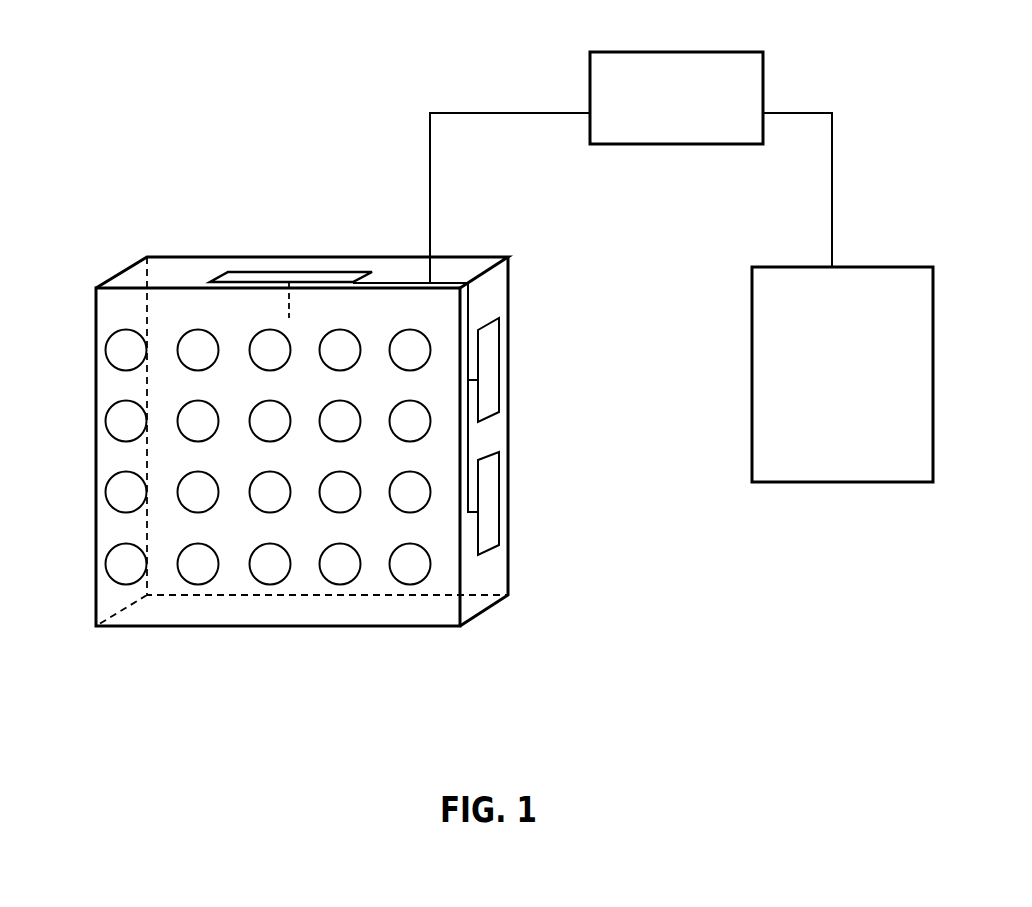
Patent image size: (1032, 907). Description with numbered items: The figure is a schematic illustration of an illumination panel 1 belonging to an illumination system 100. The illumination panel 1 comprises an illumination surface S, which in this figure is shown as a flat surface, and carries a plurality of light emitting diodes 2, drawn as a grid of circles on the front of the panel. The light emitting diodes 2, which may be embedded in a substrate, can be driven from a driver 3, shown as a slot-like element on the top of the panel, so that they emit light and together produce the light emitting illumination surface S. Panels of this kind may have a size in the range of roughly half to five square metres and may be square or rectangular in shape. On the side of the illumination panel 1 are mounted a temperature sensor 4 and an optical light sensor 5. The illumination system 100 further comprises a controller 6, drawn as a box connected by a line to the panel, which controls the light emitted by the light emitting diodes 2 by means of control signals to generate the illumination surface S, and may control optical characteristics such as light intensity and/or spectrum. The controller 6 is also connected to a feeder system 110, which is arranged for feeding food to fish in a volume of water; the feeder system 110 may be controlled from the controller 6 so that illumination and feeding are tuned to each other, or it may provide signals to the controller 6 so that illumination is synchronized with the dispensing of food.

The illumination system 100 is at (264, 131).
The illumination panel 1 is at (470, 603).
The light emitting diodes 2 is at (190, 567).
The illumination surface S is at (294, 530).
The driver 3 is at (272, 277).
The temperature sensor 4 is at (490, 365).
The optical light sensor 5 is at (490, 512).
The controller 6 is at (631, 167).
The feeder system 110 is at (842, 374).